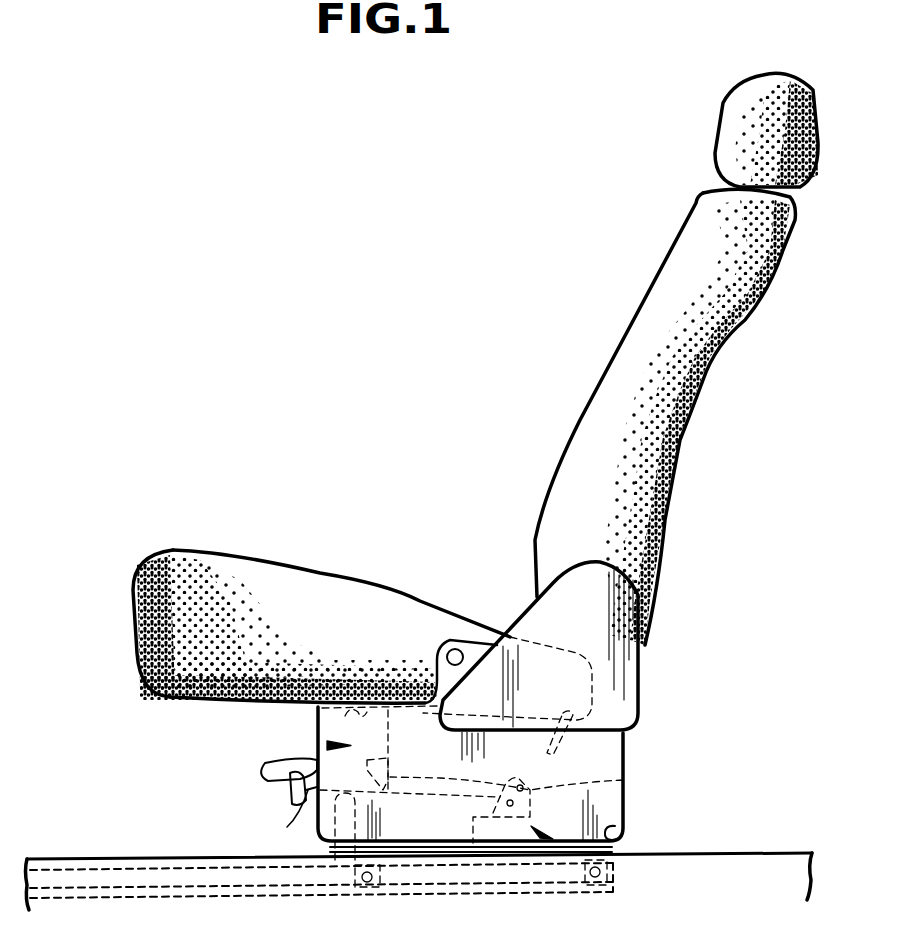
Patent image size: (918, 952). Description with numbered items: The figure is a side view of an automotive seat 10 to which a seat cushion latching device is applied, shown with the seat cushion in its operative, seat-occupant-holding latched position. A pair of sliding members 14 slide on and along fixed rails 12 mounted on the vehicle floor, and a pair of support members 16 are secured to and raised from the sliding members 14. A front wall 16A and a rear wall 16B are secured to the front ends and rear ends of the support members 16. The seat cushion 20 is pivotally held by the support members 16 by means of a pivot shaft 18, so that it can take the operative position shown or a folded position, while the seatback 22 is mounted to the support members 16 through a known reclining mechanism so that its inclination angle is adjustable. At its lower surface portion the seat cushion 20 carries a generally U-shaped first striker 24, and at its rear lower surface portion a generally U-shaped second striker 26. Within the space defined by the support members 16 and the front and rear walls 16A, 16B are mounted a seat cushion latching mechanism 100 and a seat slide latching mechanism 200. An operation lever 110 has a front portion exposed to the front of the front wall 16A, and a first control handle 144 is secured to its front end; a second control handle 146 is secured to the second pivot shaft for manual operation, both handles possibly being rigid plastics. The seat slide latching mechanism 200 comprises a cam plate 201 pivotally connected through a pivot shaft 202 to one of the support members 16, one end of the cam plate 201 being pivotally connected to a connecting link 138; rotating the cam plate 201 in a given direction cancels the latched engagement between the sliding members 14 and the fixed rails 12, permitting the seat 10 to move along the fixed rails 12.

The automotive seat 10 is at (417, 460).
The fixed rails 12 is at (77, 880).
The sliding members 14 is at (623, 830).
The support members 16 is at (613, 803).
The front wall 16A is at (318, 733).
The rear wall 16B is at (630, 740).
The pivot shaft 18 is at (457, 647).
The seat cushion 20 is at (190, 560).
The seatback 22 is at (700, 390).
The first striker 24 is at (367, 693).
The second striker 26 is at (557, 740).
The seat cushion latching mechanism 100 is at (317, 742).
The operation lever 110 is at (285, 821).
The connecting link 138 is at (433, 793).
The first control handle 144 is at (287, 797).
The second control handle 146 is at (267, 770).
The seat slide latching mechanism 200 is at (553, 837).
The cam plate 201 is at (623, 780).
The pivot shaft 202 is at (510, 810).